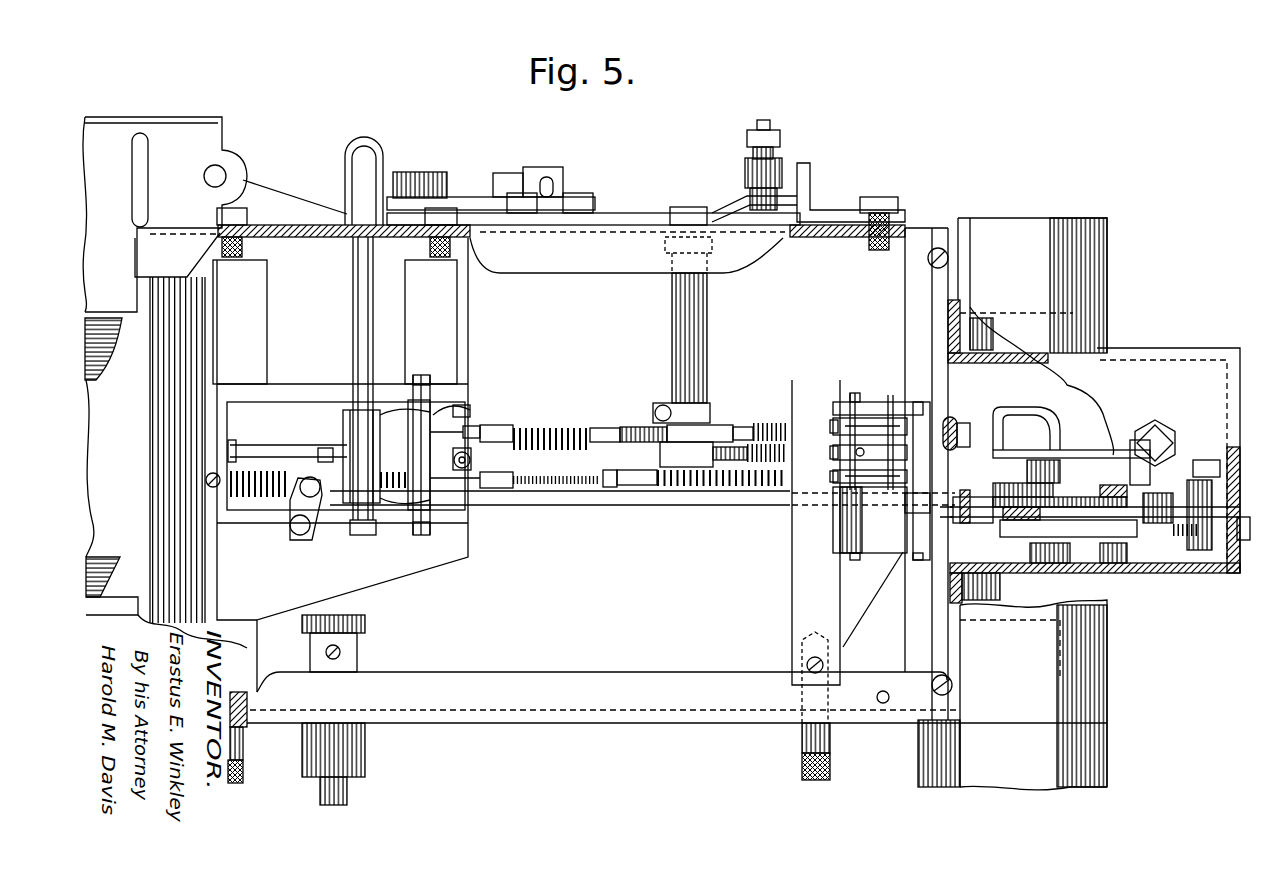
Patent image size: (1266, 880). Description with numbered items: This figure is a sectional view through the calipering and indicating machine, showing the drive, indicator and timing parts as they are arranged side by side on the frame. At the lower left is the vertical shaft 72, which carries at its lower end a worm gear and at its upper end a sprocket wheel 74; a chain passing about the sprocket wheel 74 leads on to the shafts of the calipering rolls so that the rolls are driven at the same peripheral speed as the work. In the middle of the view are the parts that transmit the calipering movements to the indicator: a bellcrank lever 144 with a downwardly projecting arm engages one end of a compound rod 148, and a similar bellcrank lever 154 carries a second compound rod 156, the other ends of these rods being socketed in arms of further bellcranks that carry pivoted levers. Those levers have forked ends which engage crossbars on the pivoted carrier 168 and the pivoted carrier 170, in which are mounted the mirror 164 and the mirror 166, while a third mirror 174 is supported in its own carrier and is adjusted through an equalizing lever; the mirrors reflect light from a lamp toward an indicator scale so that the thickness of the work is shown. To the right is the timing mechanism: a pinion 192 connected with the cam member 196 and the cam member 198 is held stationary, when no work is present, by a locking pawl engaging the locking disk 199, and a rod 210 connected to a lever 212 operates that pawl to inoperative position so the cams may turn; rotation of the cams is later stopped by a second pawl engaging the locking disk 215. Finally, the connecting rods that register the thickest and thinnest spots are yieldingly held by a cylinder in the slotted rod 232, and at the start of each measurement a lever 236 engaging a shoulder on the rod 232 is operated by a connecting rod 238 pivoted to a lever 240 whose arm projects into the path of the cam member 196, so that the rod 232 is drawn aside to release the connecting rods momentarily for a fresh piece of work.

The shaft 72 is at (347, 793).
The sprocket wheel 74 is at (348, 616).
The bellcrank lever 144 is at (436, 405).
The compound rod 148 is at (550, 433).
The bellcrank lever 154 is at (438, 470).
The second compound rod 156 is at (552, 480).
The mirror 164 is at (833, 425).
The mirror 166 is at (833, 478).
The pivoted carrier 168 is at (868, 420).
The pivoted carrier 170 is at (877, 493).
The mirror 174 is at (833, 455).
The pinion 192 is at (1047, 495).
The cam member 196 is at (1018, 510).
The cam member 198 is at (1070, 527).
The locking disk 199 is at (1027, 492).
The rod 210 is at (1075, 452).
The lever 212 is at (1113, 490).
The locking disk 215 is at (1127, 570).
The rod 232 is at (252, 455).
The lever 236 is at (293, 497).
The connecting rod 238 is at (662, 497).
The lever 240 is at (997, 515).